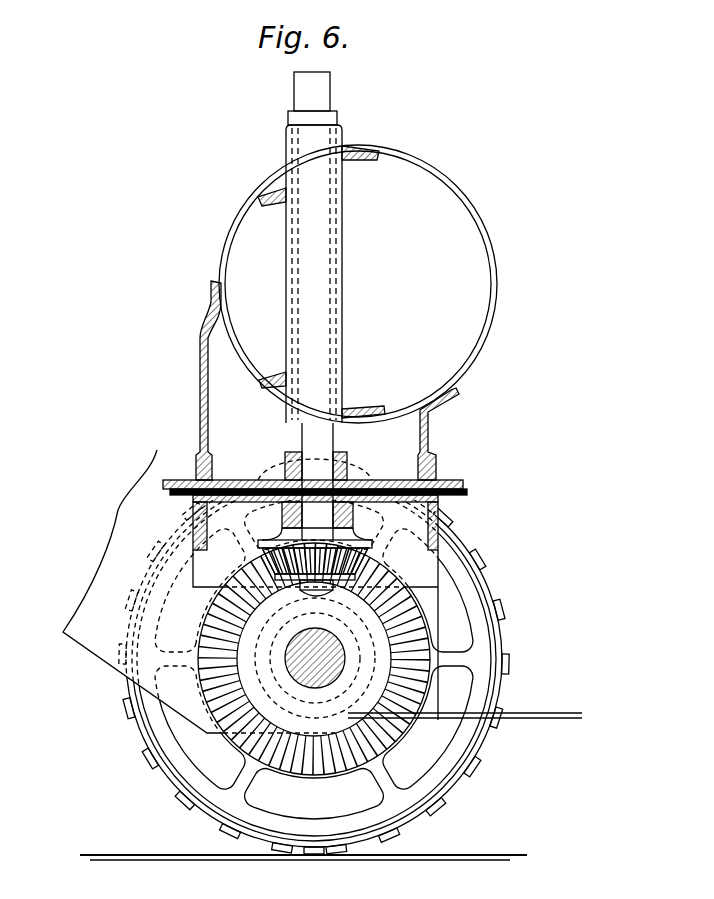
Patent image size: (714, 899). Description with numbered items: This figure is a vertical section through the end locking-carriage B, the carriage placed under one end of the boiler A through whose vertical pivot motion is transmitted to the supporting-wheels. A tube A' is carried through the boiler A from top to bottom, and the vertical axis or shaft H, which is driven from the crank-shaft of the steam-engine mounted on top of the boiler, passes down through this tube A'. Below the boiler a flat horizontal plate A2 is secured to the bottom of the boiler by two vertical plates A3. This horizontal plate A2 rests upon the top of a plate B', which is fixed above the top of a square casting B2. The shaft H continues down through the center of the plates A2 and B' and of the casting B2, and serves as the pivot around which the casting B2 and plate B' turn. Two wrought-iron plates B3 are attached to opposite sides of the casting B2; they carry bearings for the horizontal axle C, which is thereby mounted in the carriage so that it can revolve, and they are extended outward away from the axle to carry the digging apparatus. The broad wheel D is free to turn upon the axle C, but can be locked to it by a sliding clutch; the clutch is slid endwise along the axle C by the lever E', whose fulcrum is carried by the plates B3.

The boiler A is at (367, 284).
The tube A' is at (321, 274).
The vertical axis H is at (317, 306).
The vertical plates A3 is at (327, 380).
The flat horizontal plate A2 is at (465, 487).
The plate B' is at (333, 502).
The square casting B2 is at (315, 526).
The locking-carriage B is at (315, 635).
The wrought-iron plates B3 is at (199, 591).
The horizontal axle C is at (314, 659).
The broad wheel D is at (316, 659).
The lever E' is at (465, 726).